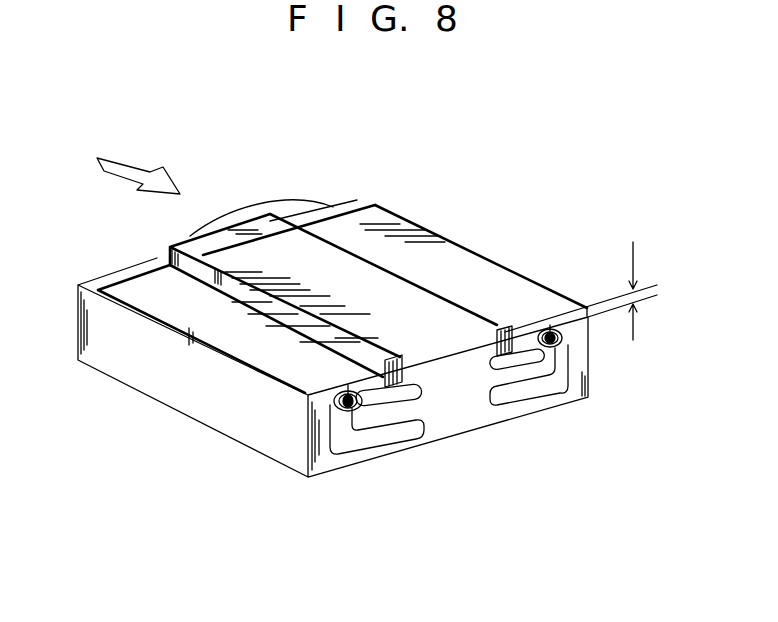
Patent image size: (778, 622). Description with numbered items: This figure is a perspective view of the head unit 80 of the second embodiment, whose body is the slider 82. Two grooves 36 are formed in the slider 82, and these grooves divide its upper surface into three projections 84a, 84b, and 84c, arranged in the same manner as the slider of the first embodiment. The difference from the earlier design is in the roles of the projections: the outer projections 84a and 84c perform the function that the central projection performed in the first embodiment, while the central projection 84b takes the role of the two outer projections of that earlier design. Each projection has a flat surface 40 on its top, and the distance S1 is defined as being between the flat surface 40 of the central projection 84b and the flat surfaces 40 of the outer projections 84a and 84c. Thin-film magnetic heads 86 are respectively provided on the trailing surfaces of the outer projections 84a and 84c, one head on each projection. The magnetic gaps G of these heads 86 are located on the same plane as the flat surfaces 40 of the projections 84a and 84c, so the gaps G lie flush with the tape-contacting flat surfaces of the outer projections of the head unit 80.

The head unit 80 is at (376, 184).
The flat surface 40 is at (218, 243).
The slider 82 is at (113, 367).
The projection 84a is at (507, 284).
The projection 84b is at (410, 292).
The projection 84c is at (237, 349).
The groove 36 is at (496, 352).
The thin-film magnetic head 86 is at (372, 455).
The magnetic gap G is at (348, 394).
The distance S1 is at (634, 283).